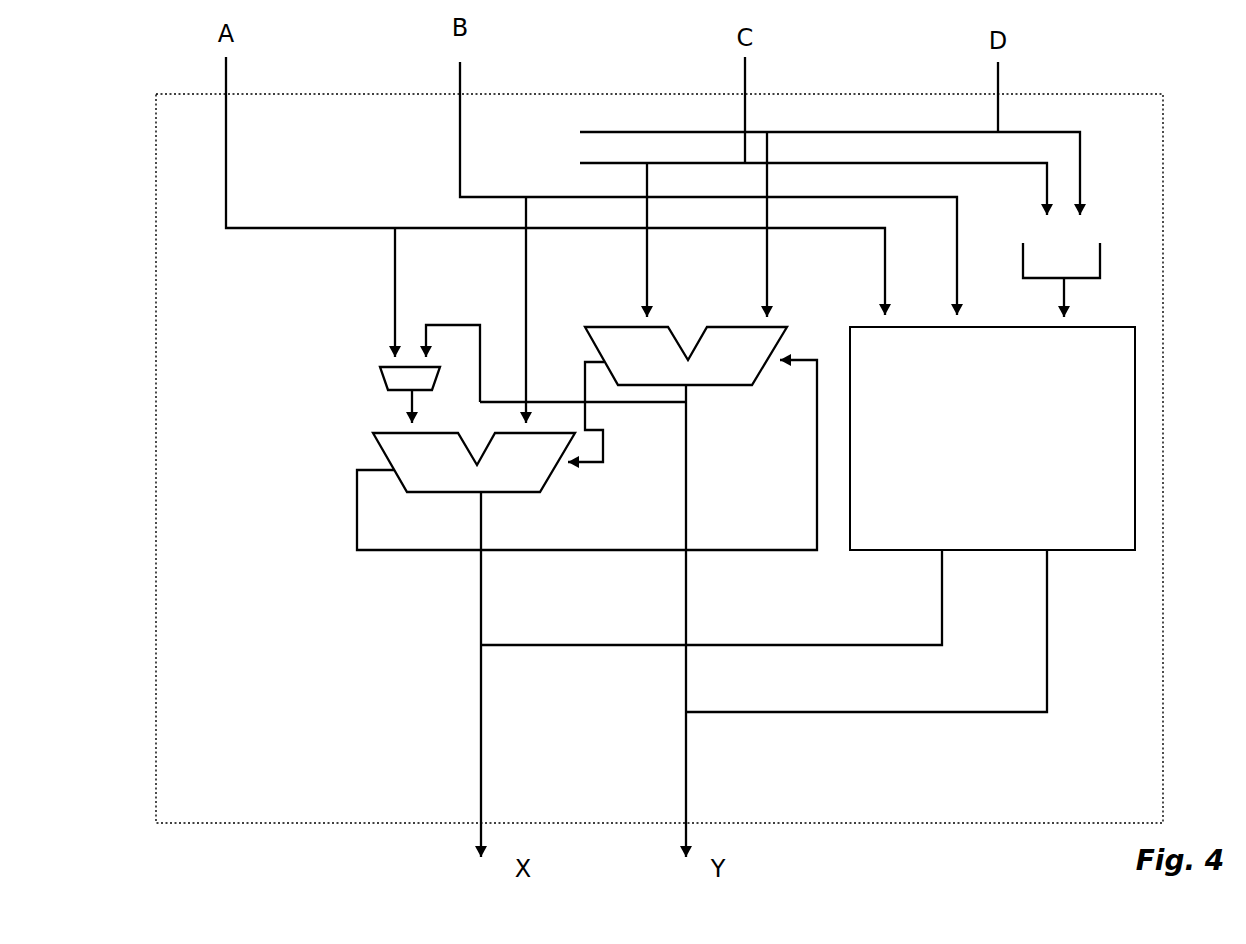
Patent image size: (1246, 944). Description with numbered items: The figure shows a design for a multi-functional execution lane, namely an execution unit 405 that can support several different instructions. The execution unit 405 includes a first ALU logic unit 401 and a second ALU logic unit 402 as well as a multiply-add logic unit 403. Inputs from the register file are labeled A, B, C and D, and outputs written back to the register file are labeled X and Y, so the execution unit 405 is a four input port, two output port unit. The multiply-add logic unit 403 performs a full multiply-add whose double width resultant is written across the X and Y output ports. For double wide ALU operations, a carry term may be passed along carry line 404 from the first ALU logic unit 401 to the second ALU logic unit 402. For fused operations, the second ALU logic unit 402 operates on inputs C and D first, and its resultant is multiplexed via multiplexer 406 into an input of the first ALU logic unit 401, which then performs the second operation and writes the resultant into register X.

The first ALU logic unit 401 is at (393, 443).
The second ALU logic unit 402 is at (620, 340).
The multiply-add logic unit 403 is at (974, 481).
The carry line 404 is at (587, 463).
The execution unit 405 is at (1131, 784).
The multiplexer 406 is at (387, 378).